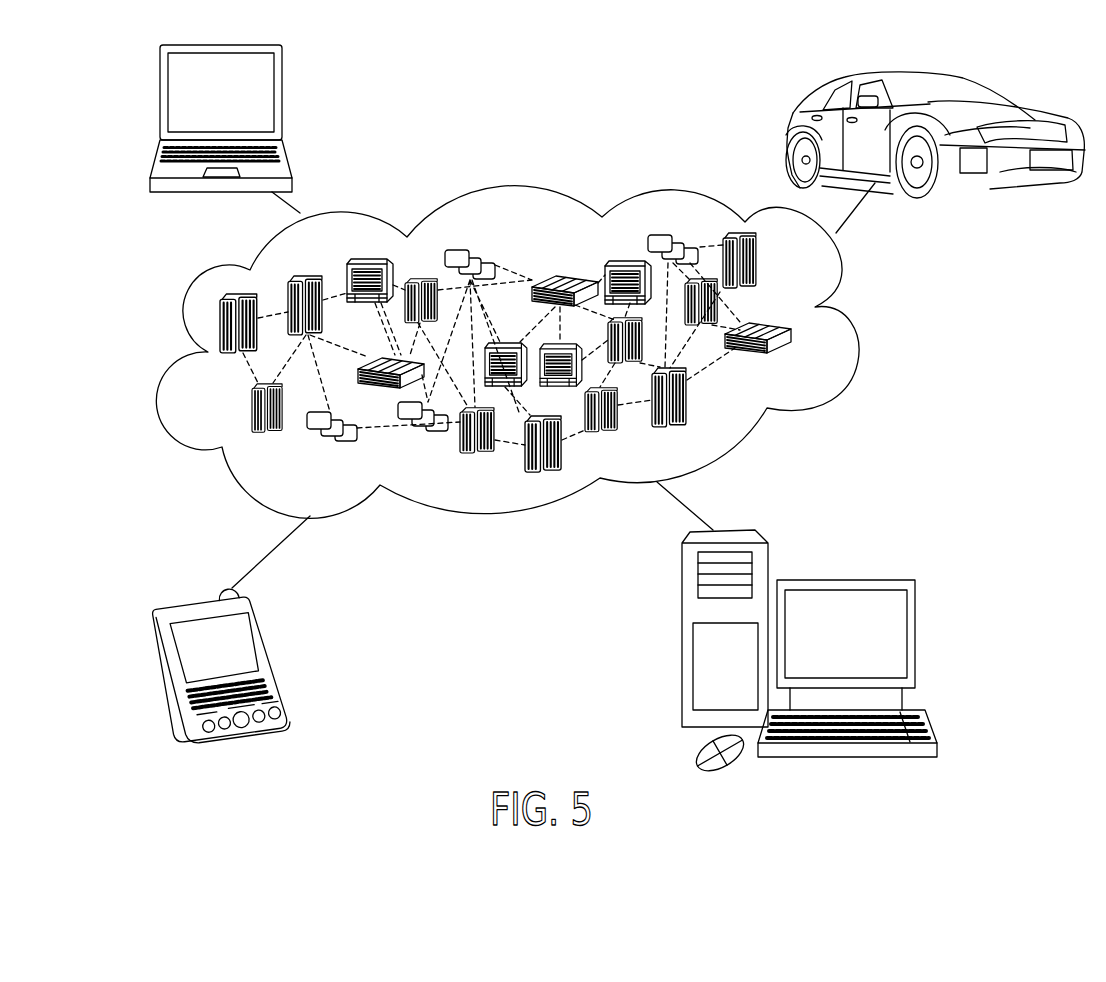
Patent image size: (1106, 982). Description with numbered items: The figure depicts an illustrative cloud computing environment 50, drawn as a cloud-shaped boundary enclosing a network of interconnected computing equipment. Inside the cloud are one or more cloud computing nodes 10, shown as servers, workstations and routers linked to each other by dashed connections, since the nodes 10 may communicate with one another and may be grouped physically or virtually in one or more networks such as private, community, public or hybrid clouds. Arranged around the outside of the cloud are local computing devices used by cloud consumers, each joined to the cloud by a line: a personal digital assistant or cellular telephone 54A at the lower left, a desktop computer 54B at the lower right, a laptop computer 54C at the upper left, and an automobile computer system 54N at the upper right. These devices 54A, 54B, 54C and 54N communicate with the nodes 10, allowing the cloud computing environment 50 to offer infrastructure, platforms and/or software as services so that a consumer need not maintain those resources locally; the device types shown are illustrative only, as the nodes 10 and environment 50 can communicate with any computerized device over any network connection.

The cloud computing node 10 is at (808, 360).
The cloud computing environment 50 is at (858, 341).
The personal digital assistant or cellular telephone 54A is at (270, 655).
The desktop computer 54B is at (877, 578).
The laptop computer 54C is at (280, 112).
The automobile computer system 54N is at (987, 103).